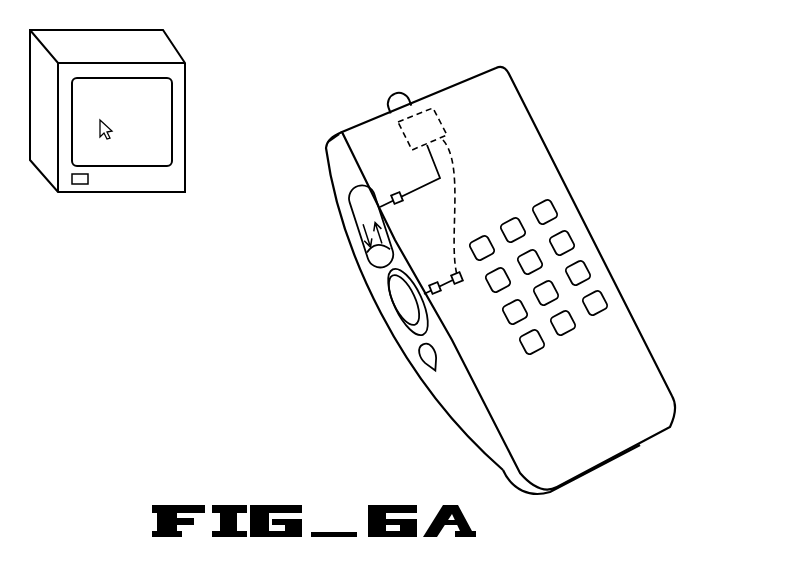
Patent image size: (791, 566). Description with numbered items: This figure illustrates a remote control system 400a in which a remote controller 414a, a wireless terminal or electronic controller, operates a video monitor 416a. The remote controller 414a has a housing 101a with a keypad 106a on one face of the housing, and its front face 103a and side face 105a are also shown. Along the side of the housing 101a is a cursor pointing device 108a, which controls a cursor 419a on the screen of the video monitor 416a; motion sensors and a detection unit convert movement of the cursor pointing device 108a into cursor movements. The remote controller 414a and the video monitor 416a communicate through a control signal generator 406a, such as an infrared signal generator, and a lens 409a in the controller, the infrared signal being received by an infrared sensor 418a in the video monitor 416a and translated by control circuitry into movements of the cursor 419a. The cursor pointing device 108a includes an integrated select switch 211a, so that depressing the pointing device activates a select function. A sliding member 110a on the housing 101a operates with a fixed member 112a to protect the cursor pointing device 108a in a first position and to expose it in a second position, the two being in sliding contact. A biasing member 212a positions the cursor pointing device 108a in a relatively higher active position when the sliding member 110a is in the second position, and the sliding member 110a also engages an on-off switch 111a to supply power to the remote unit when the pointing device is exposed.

The remote control system 400a is at (616, 48).
The housing 101a is at (510, 298).
The front surface of housing 103a is at (630, 378).
The side surface of housing 105a is at (343, 172).
The keypad 106a is at (560, 222).
The cursor pointing device 108a is at (397, 310).
The sliding member 110a is at (357, 241).
The on-off switch 111a is at (396, 194).
The fixed member 112a is at (420, 368).
The select switch 211a is at (458, 287).
The biasing member 212a is at (433, 283).
The control signal generator 406a is at (443, 140).
The lens 409a is at (397, 92).
The remote controller 414a is at (573, 485).
The video monitor 416a is at (144, 128).
The infrared sensor 418a is at (82, 185).
The cursor 419a is at (103, 120).